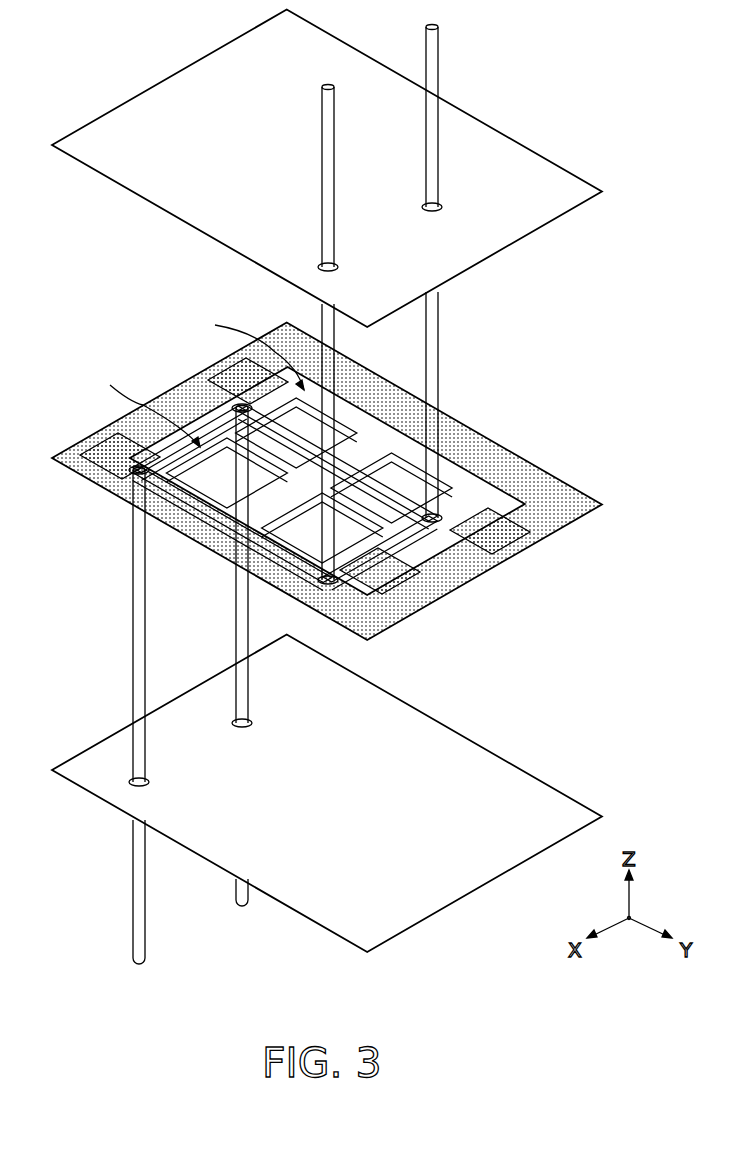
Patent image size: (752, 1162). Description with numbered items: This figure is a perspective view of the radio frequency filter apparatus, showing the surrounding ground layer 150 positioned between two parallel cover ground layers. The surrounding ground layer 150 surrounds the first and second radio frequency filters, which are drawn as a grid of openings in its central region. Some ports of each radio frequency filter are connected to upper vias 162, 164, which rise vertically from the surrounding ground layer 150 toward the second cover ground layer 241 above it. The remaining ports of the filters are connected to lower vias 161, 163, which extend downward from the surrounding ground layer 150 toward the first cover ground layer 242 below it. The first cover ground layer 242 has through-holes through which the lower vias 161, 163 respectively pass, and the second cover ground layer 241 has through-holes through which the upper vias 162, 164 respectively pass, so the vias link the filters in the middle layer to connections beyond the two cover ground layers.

The surrounding ground layer 150 is at (200, 373).
The lower via 161 is at (133, 660).
The upper via 162 is at (335, 415).
The lower via 163 is at (236, 597).
The upper via 164 is at (439, 343).
The second cover ground layer 241 is at (538, 182).
The first cover ground layer 242 is at (538, 803).